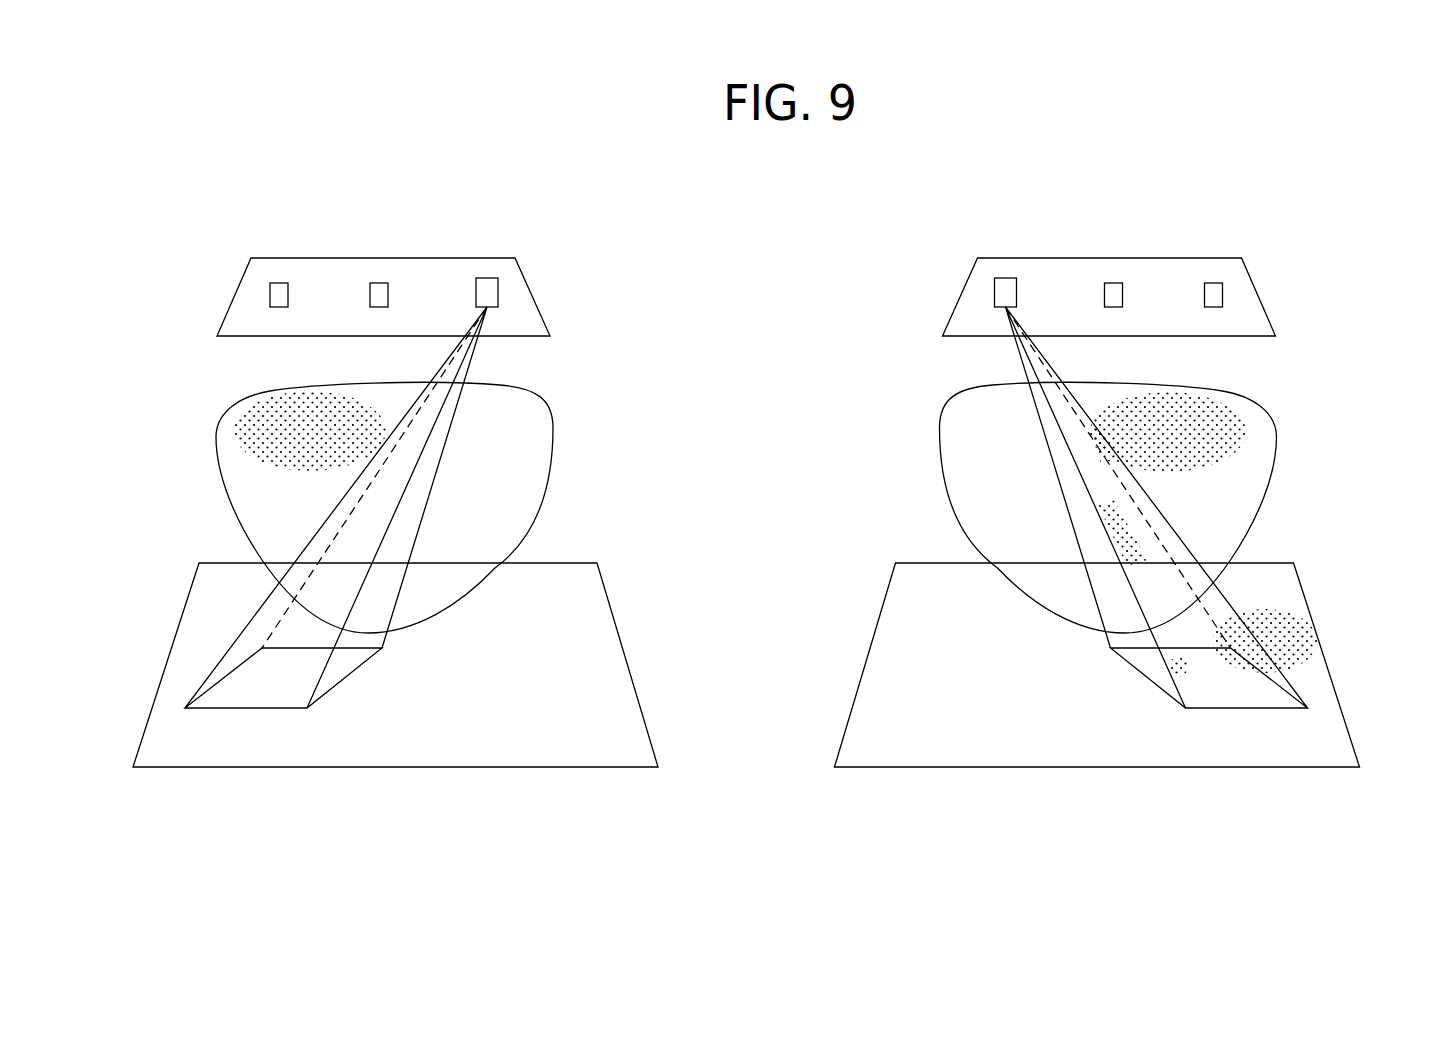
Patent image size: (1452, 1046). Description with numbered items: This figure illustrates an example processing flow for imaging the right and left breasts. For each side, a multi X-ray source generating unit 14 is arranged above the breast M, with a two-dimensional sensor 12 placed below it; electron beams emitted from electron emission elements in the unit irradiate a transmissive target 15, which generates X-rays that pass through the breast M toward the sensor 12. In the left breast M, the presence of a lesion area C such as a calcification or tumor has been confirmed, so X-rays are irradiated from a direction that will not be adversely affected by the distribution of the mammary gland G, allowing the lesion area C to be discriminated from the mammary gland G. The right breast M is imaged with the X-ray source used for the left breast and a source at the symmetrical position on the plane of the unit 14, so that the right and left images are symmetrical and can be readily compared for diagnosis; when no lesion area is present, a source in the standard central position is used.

The two-dimensional sensor 12 is at (617, 700).
The multi X-ray source generating unit 14 is at (517, 288).
The transmissive target 15 is at (485, 278).
The breast M is at (533, 458).
The mammary gland G is at (1228, 425).
The lesion area C is at (1100, 508).